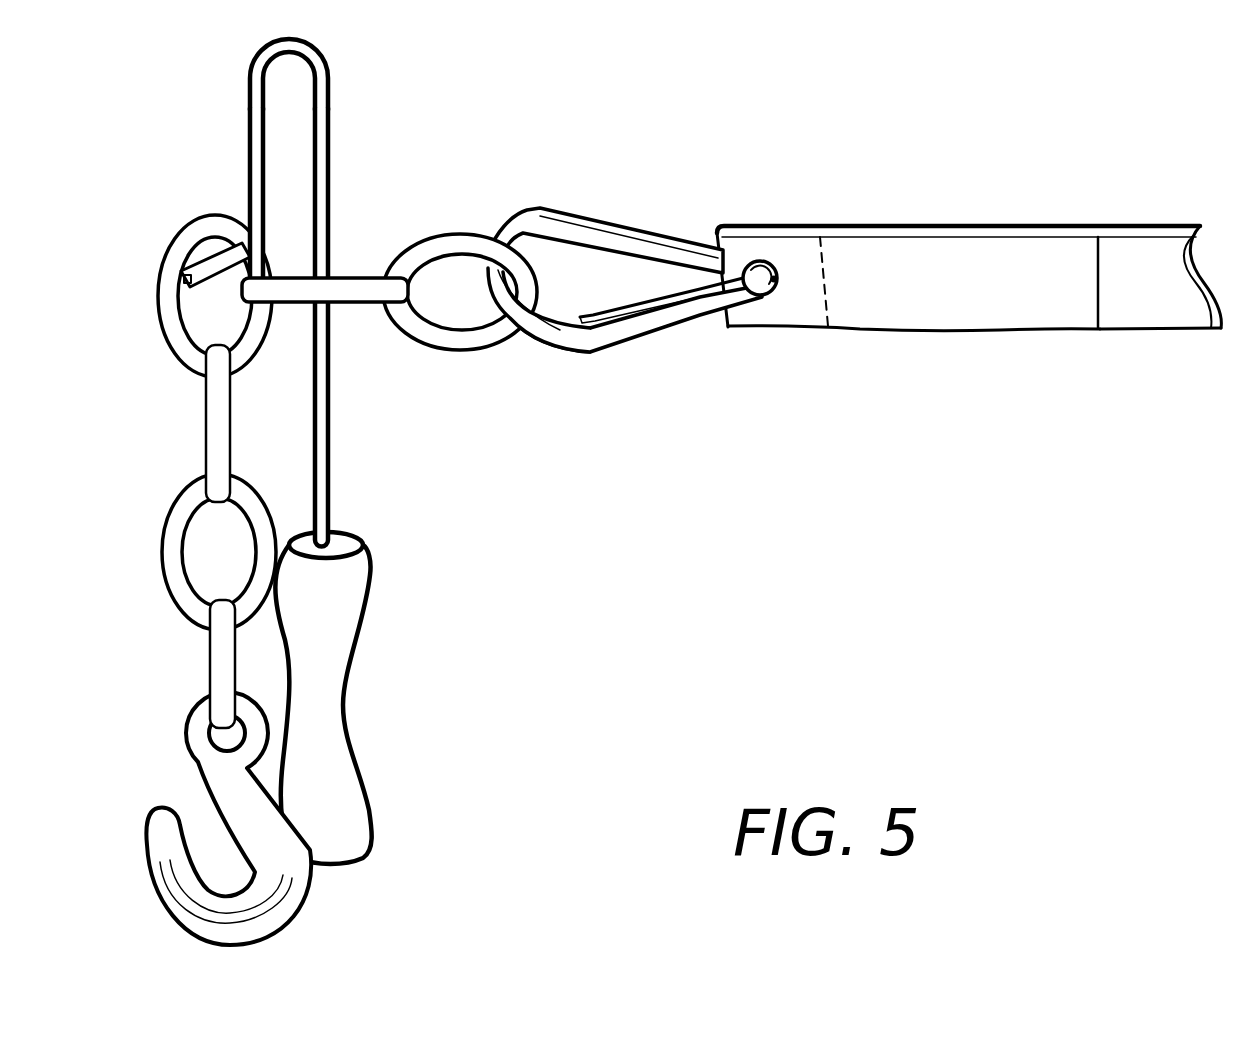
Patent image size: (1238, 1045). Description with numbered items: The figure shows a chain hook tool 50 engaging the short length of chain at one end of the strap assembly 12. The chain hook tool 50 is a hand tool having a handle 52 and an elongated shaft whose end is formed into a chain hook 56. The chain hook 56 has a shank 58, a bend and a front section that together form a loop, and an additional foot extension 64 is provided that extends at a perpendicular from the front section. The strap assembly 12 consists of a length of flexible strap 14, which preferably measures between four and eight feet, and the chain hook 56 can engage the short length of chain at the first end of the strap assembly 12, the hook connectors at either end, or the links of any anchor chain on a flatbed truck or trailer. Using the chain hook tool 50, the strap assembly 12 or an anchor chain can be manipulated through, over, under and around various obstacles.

The strap assembly 12 is at (969, 278).
The flexible strap 14 is at (1160, 295).
The chain hook tool 50 is at (289, 287).
The handle 52 is at (330, 703).
The chain hook 56 is at (255, 65).
The shank 58 is at (325, 170).
The foot extension 64 is at (251, 163).